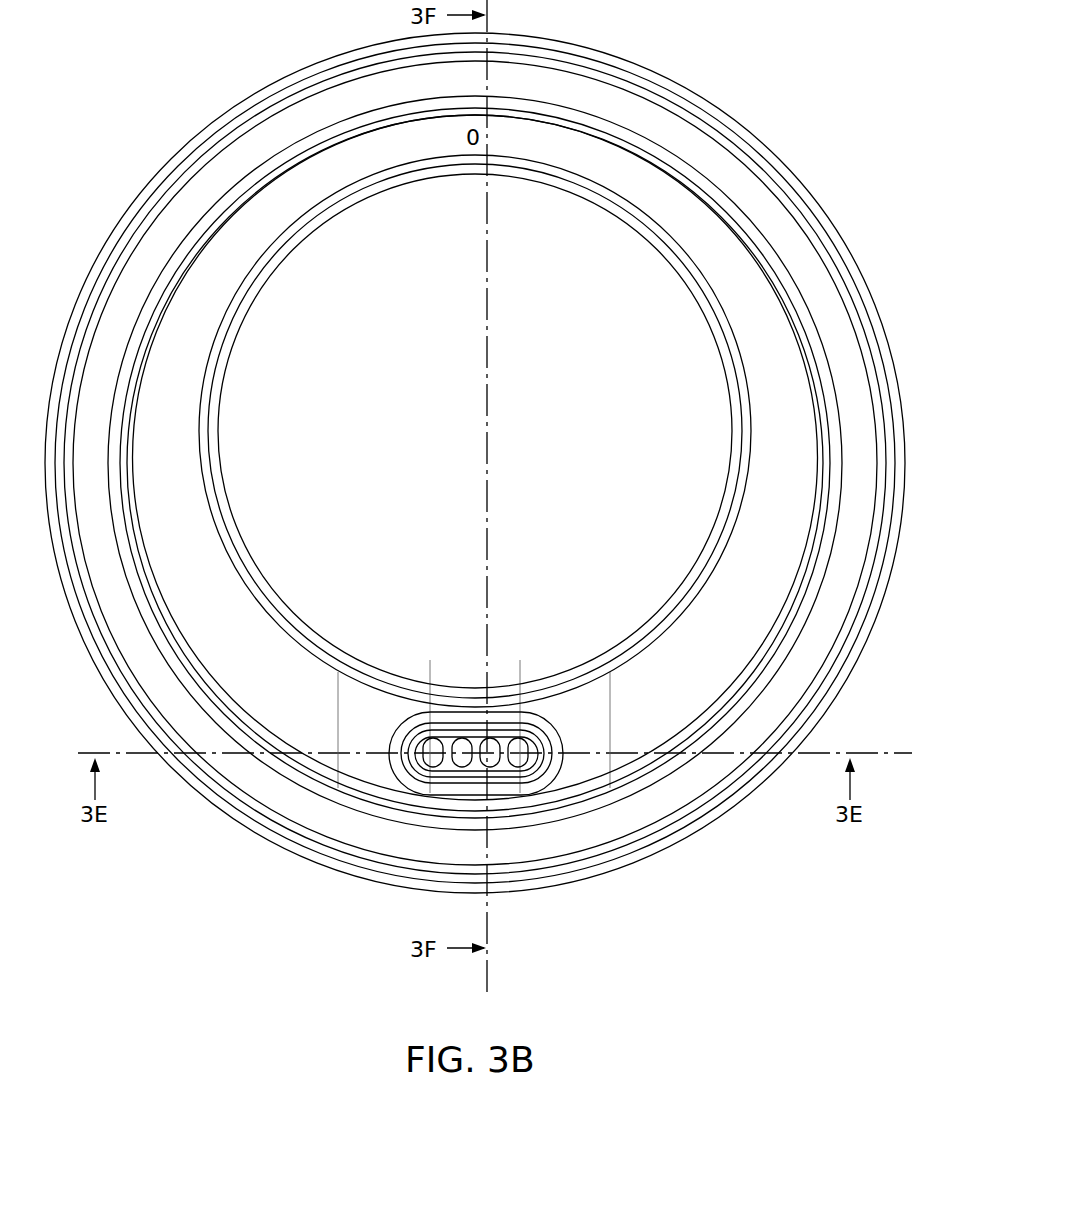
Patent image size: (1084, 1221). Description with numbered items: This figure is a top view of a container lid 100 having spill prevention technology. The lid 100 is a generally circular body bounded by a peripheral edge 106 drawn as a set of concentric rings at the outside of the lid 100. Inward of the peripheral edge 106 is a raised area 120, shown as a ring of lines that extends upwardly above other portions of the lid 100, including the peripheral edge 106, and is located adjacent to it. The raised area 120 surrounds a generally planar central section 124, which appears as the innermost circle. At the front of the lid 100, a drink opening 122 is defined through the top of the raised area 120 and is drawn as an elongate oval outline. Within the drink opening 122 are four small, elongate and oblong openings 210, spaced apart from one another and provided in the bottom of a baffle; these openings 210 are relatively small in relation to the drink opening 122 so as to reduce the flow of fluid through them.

The lid 100 is at (832, 90).
The peripheral edge 106 is at (920, 457).
The raised area 120 is at (795, 425).
The central section 124 is at (695, 372).
The drink opening 122 is at (412, 797).
The openings 210 is at (420, 740).